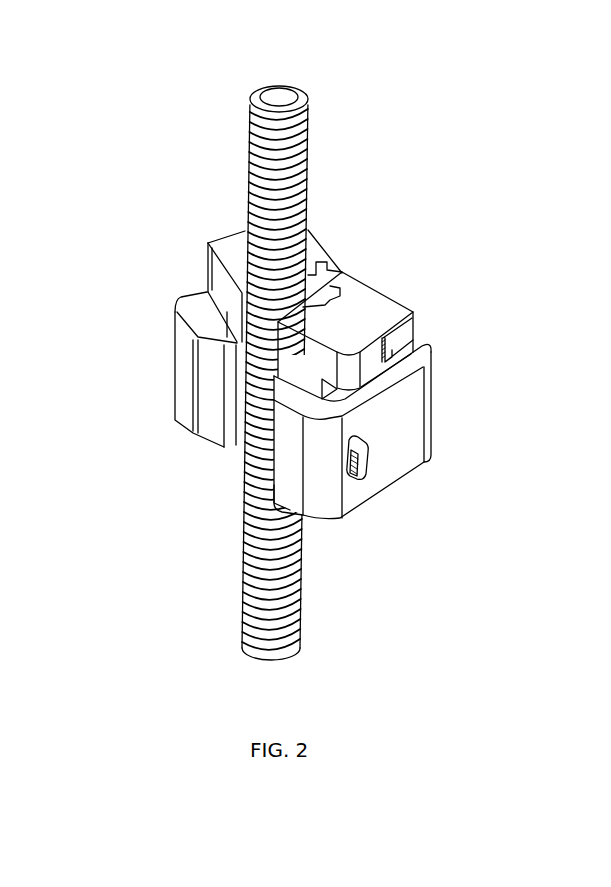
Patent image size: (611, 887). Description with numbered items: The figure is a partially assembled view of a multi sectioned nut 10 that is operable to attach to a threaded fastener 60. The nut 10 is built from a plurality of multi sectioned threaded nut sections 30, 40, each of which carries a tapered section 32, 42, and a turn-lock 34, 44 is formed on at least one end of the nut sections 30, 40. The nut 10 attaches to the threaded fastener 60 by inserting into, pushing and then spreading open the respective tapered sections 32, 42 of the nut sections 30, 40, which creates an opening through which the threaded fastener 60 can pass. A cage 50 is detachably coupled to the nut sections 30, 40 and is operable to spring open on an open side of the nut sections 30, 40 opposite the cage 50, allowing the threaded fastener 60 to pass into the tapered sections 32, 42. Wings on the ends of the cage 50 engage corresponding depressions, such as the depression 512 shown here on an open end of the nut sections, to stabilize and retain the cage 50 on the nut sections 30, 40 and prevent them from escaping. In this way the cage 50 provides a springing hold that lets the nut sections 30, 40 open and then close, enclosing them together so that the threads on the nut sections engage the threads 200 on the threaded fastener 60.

The multi sectioned nut 10 is at (495, 366).
The threads 200 is at (290, 573).
The threaded fastener 60 is at (282, 98).
The threaded nut section 30 is at (356, 317).
The tapered section 32 is at (243, 503).
The turn-lock 34 is at (398, 344).
The threaded nut section 40 is at (226, 247).
The turn-lock 44 is at (211, 262).
The tapered section 42 is at (211, 428).
The cage 50 is at (395, 433).
The depression 512 is at (360, 472).